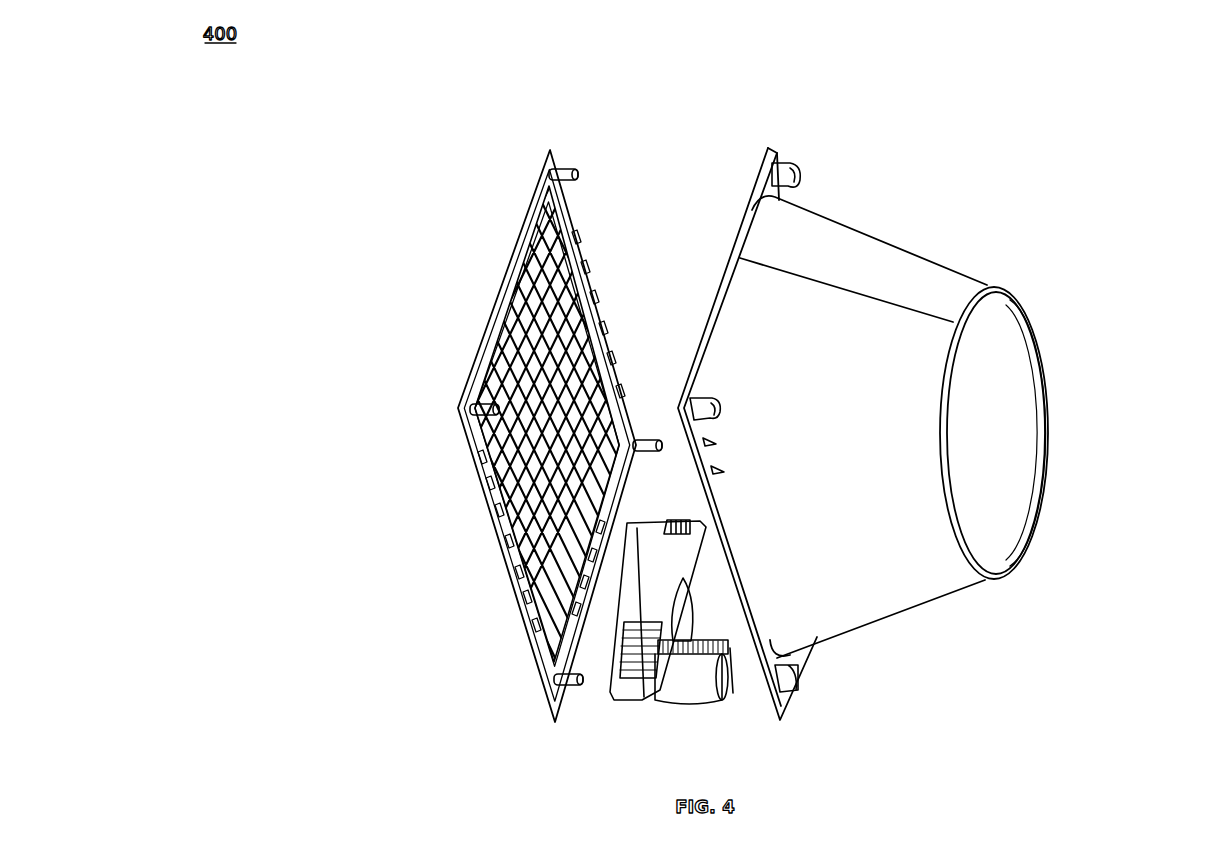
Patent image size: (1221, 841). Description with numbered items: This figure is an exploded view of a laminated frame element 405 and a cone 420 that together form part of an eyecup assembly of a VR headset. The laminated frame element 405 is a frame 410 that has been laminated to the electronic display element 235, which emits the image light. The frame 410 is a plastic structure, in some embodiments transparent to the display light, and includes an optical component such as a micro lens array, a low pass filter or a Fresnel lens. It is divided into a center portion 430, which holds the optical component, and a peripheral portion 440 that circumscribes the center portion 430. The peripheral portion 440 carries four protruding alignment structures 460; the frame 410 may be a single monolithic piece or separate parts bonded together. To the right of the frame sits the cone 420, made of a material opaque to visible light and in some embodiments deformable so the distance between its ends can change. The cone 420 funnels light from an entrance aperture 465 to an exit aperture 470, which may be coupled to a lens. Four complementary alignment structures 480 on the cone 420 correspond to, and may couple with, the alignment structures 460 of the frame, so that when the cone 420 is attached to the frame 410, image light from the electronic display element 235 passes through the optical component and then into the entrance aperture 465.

The electronic display element 235 is at (459, 439).
The laminated frame element 405 is at (528, 712).
The frame 410 is at (465, 398).
The cone 420 is at (890, 612).
The center portion 430 is at (547, 188).
The peripheral portion 440 is at (565, 662).
The alignment structure 460 is at (553, 170).
The entrance aperture 465 is at (693, 286).
The exit aperture 470 is at (1038, 350).
The complementary alignment structure 480 is at (793, 163).